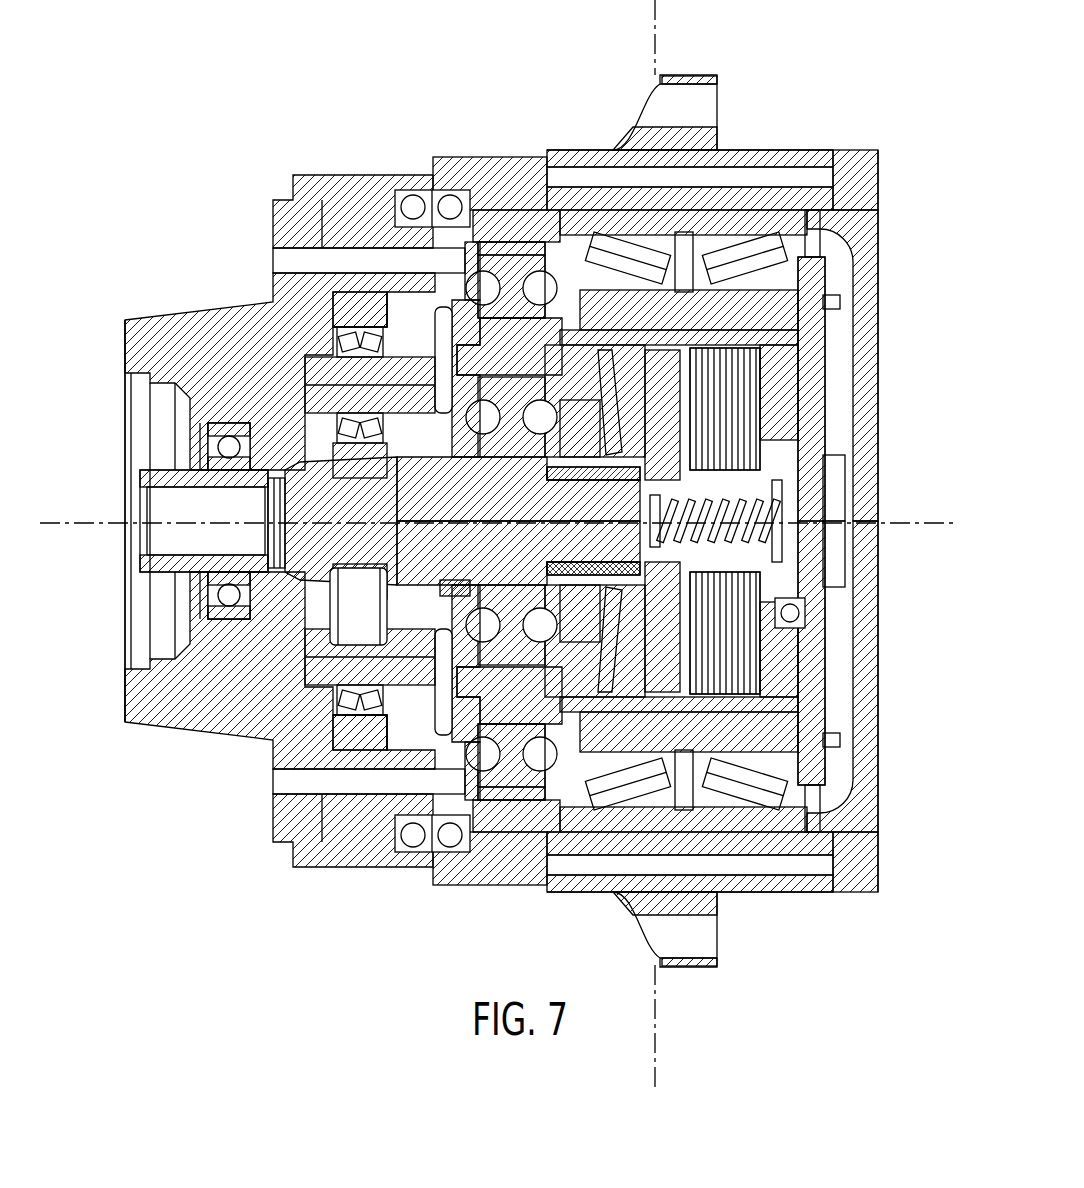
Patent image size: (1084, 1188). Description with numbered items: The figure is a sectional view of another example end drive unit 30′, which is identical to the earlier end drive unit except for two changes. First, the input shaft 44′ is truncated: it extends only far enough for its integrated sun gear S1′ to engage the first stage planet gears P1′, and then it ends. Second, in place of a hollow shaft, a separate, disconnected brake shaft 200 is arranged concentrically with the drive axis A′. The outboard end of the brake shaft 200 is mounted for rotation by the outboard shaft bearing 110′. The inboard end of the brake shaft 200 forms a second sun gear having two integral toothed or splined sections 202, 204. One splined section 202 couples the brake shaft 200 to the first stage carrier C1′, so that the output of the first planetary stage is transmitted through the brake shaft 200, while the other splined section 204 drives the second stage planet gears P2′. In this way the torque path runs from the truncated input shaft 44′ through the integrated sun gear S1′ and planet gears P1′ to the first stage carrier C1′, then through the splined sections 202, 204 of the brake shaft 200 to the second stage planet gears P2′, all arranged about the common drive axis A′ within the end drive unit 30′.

The end drive unit 30′ is at (278, 147).
The planet gears P1′ is at (340, 325).
The second stage planet gears P2′ is at (500, 215).
The integrated sun gear S1′ is at (348, 548).
The first stage carrier C1′ is at (328, 667).
The input shaft 44′ is at (288, 567).
The toothed or splined section 202 is at (450, 587).
The toothed or splined section 204 is at (523, 575).
The brake shaft 200 is at (645, 551).
The outboard shaft bearing 110′ is at (787, 613).
The drive axis A′ is at (915, 522).